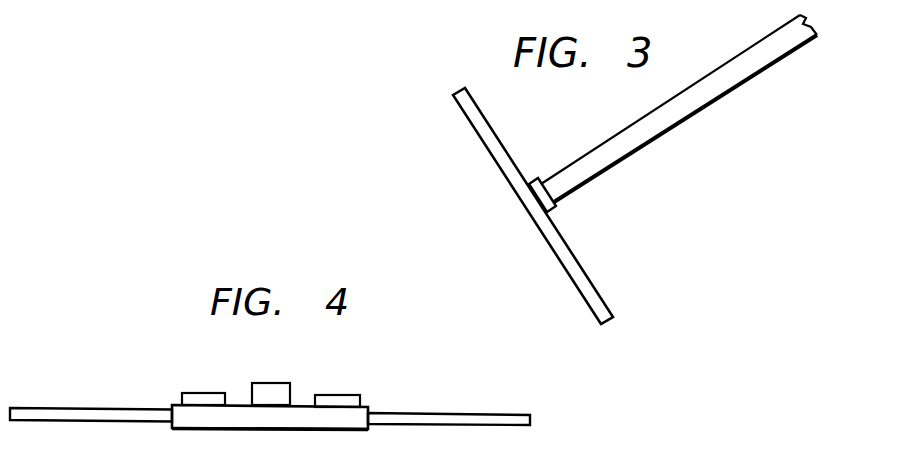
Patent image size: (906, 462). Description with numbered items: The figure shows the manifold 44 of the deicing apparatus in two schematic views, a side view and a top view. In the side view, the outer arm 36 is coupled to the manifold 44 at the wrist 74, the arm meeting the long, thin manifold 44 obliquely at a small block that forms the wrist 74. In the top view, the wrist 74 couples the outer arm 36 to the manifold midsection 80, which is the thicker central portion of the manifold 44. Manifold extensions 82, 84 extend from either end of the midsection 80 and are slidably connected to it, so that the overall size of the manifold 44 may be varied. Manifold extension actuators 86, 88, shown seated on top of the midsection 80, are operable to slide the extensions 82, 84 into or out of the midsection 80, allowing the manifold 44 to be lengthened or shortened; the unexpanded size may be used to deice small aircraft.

In FIG. 3, the outer arm 36 is at (692, 118).
In FIG. 3, the manifold 44 is at (455, 94).
In FIG. 4, the manifold 44 is at (305, 381).
In FIG. 3, the wrist 74 is at (553, 213).
In FIG. 4, the wrist 74 is at (272, 383).
In FIG. 4, the manifold midsection 80 is at (297, 405).
In FIG. 4, the manifold extension 82 is at (438, 413).
In FIG. 4, the manifold extension 84 is at (85, 407).
In FIG. 4, the manifold extension actuator 86 is at (203, 393).
In FIG. 4, the manifold extension actuator 88 is at (335, 395).